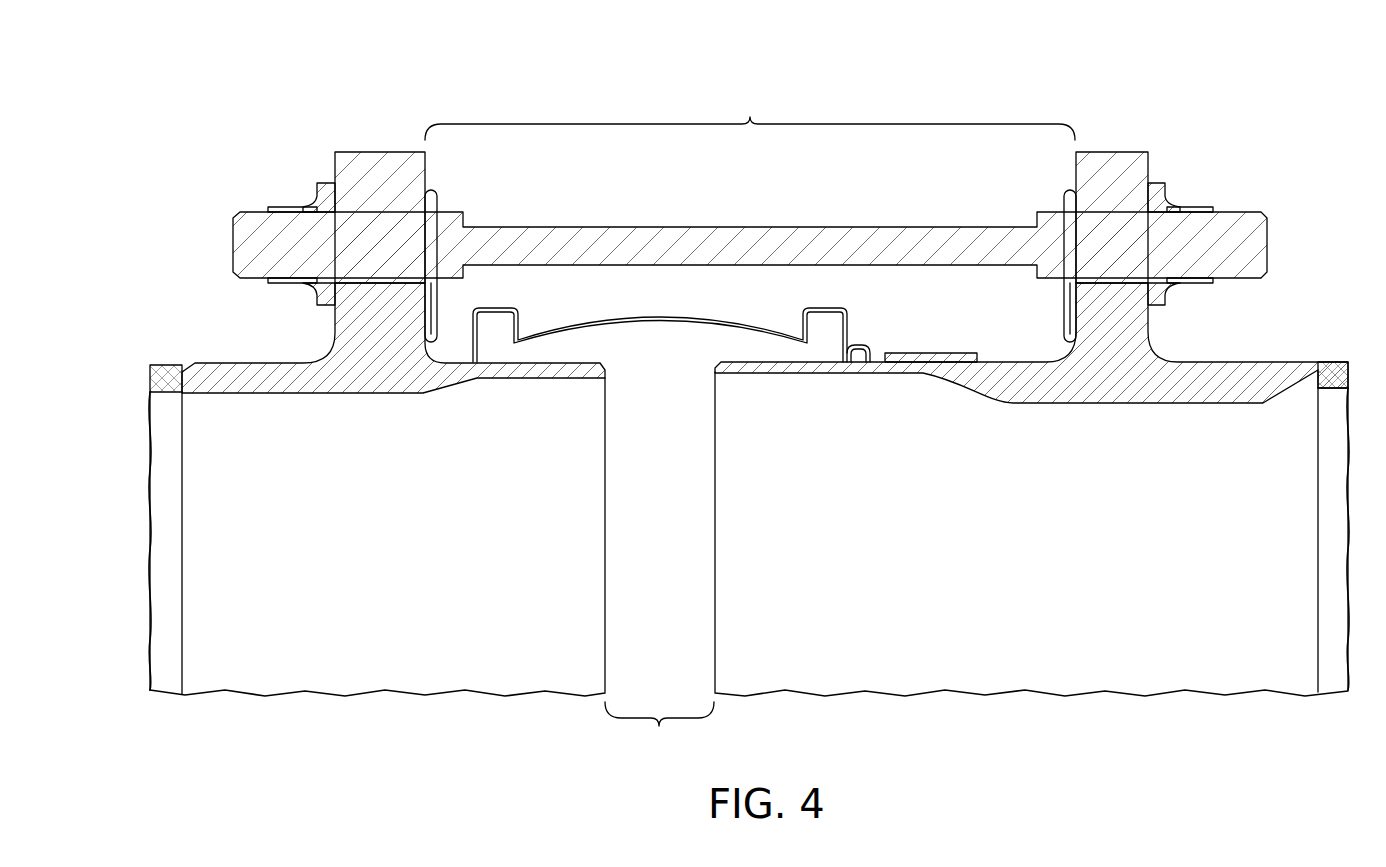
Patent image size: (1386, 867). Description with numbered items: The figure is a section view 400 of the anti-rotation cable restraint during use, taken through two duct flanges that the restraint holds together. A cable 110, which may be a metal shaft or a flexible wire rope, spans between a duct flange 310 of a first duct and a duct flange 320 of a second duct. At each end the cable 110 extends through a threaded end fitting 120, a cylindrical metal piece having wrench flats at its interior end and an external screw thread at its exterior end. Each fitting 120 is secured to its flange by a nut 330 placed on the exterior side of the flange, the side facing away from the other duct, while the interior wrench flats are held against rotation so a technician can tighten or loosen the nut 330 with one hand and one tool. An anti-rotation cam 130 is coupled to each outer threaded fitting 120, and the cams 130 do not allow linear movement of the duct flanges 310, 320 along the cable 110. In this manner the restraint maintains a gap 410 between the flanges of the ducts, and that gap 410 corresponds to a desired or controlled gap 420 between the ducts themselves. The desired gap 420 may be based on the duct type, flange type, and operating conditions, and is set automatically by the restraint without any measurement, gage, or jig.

The section view 400 is at (724, 407).
The cable 110 is at (707, 226).
The threaded end fitting 120 is at (250, 207).
The anti-rotation cam 130 is at (438, 314).
The duct flange of first duct 310 is at (377, 152).
The duct flange of second duct 320 is at (1118, 152).
The nut 330 is at (308, 206).
The gap maintained by cable restraint 410 is at (750, 111).
The desired gap 420 is at (659, 733).